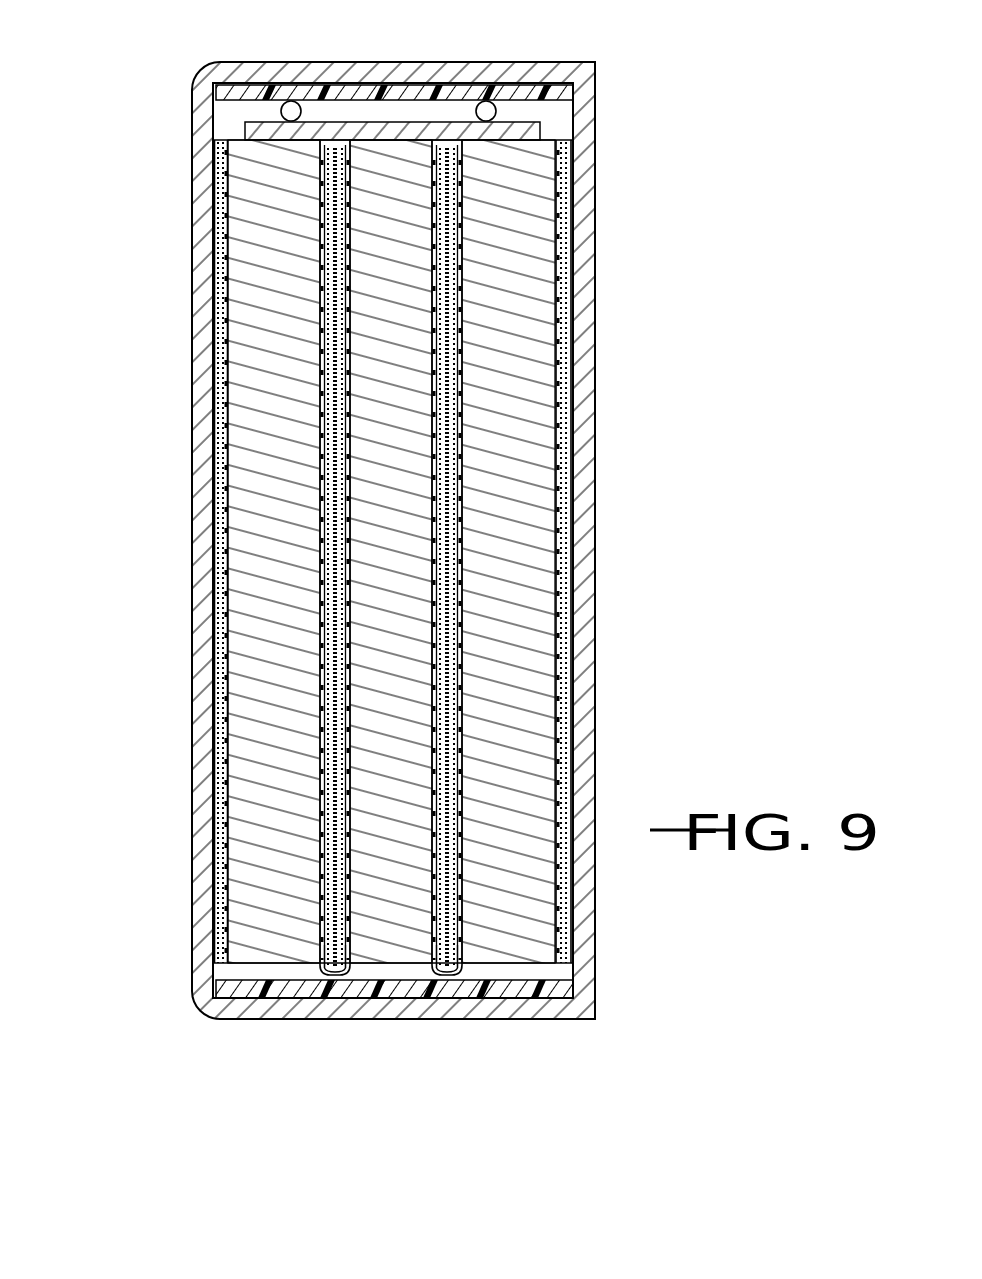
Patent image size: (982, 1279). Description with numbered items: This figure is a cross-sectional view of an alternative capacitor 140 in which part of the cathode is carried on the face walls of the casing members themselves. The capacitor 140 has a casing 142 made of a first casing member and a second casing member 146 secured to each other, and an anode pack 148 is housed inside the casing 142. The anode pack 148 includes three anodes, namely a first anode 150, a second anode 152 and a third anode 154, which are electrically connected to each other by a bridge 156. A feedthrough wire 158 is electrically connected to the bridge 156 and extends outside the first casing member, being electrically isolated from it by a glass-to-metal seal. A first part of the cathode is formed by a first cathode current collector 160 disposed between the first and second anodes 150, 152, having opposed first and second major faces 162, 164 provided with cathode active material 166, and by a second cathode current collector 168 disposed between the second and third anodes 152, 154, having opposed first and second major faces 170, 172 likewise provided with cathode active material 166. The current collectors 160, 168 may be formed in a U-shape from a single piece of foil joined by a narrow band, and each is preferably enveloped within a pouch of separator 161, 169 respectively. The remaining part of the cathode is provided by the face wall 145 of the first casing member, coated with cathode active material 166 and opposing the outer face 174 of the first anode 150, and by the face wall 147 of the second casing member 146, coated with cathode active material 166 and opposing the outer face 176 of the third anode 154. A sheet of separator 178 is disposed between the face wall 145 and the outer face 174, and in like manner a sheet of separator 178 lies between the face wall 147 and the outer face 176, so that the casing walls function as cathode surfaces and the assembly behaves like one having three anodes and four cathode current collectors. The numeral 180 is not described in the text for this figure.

The capacitor 140 is at (652, 133).
The casing 142 is at (205, 57).
The face wall of first casing member 145 is at (203, 457).
The second casing member 146 is at (580, 62).
The face wall of second casing member 147 is at (573, 700).
The anode pack 148 is at (234, 126).
The first anode 150 is at (256, 957).
The second anode 152 is at (402, 986).
The third anode 154 is at (507, 953).
The bridge 156 is at (375, 130).
The feedthrough wire 158 is at (290, 101).
The first cathode current collector 160 is at (333, 975).
The separator pouch 161 is at (330, 145).
The first major face of first cathode current collector 162 is at (326, 952).
The second major face of first cathode current collector 164 is at (388, 953).
The cathode active material 166 is at (320, 508).
The second cathode current collector 168 is at (446, 152).
The separator pouch 169 is at (452, 972).
The first major face of second cathode current collector 170 is at (450, 164).
The second major face of second cathode current collector 172 is at (433, 176).
The outer face of first anode 174 is at (226, 282).
The outer face of third anode 176 is at (556, 248).
The sheet of separator 178 is at (217, 724).
The right collector layer 180 is at (564, 362).